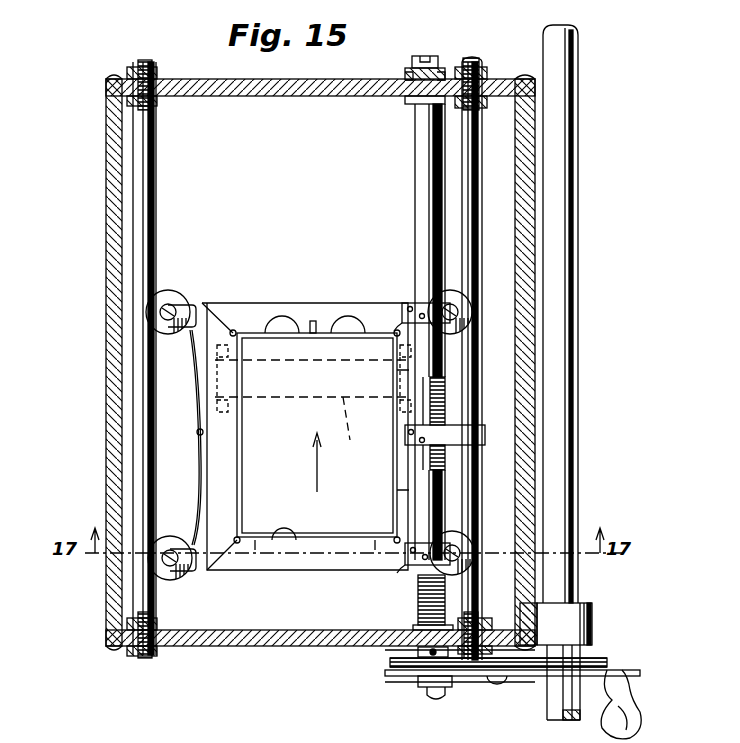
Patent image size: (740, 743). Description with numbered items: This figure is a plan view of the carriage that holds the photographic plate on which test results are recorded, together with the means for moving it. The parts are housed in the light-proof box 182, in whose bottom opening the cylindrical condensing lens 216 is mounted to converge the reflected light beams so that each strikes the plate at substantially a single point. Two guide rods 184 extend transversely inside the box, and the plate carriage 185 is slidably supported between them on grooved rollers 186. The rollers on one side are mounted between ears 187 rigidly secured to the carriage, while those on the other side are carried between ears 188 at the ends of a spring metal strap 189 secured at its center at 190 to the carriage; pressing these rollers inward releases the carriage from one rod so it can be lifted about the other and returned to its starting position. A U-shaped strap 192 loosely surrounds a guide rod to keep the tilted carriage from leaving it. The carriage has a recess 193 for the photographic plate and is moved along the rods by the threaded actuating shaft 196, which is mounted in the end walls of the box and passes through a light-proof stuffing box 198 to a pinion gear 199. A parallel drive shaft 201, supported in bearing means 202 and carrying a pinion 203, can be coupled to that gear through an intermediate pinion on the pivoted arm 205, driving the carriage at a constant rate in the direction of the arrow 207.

The light-proof box 182 is at (115, 252).
The guide rods 184 is at (146, 192).
The plate carriage 185 is at (387, 300).
The grooved rollers 186 is at (172, 300).
The ears 187 is at (440, 302).
The ears 188 is at (190, 312).
The spring metal strap 189 is at (192, 357).
The securing point of strap 190 is at (197, 435).
The U-shaped strap 192 is at (460, 428).
The recess 193 is at (310, 529).
The actuating shaft 196 is at (420, 194).
The light-proof stuffing box 198 is at (395, 661).
The pinion gear 199 is at (402, 670).
The drive shaft 201 is at (572, 475).
The bearing means 202 is at (592, 620).
The pinion 203 is at (607, 670).
The arm 205 is at (527, 678).
The arrow 207 is at (314, 463).
The cylindrical condensing lens 216 is at (354, 430).